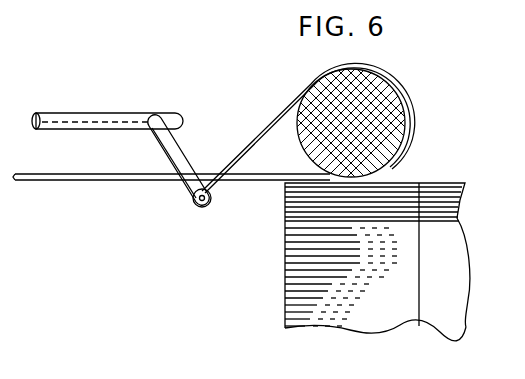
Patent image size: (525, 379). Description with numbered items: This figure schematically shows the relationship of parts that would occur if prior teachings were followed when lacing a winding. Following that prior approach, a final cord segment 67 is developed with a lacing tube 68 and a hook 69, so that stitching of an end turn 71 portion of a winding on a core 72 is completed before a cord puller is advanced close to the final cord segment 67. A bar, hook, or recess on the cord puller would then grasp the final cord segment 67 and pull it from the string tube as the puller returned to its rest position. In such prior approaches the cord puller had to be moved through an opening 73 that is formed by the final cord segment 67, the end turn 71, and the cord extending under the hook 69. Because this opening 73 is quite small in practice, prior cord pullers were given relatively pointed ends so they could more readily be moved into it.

The final cord segment 67 is at (243, 152).
The lacing tube 68 is at (160, 147).
The hook 69 is at (143, 180).
The end turn 71 is at (388, 128).
The core 72 is at (396, 313).
The opening 73 is at (275, 140).